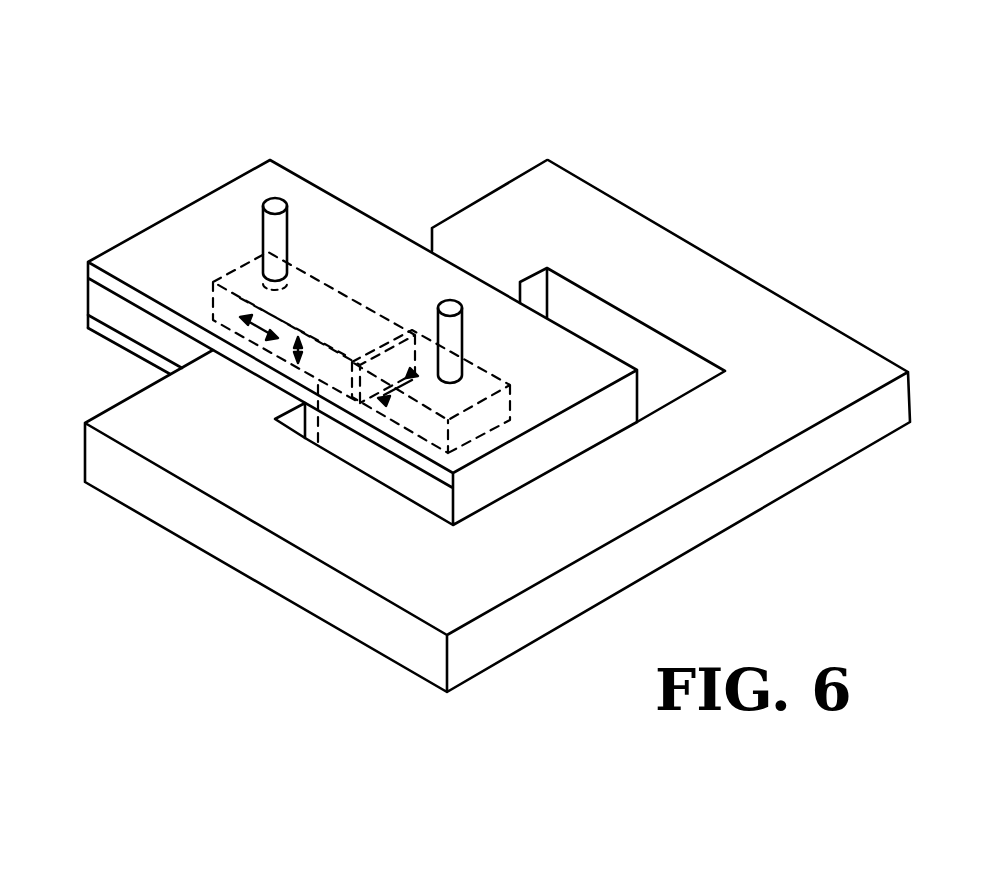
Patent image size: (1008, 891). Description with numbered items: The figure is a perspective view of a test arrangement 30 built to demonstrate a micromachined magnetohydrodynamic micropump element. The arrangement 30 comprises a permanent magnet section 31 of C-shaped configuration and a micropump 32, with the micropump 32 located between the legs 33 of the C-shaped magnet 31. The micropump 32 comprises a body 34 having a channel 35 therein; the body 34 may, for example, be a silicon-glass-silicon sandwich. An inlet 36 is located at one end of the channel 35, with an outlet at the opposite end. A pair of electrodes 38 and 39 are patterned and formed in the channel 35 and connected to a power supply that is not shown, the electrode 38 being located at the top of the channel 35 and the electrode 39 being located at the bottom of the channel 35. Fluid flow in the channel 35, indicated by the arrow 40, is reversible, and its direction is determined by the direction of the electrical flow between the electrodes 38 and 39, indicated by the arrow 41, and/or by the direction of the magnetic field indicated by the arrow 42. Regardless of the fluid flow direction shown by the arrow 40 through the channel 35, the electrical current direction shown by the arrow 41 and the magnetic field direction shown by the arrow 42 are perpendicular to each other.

The test arrangement 30 is at (412, 209).
The permanent magnet section 31 is at (367, 632).
The micropump 32 is at (131, 208).
The legs 33 is at (582, 200).
The body 34 is at (200, 220).
The channel 35 is at (303, 292).
The inlet 36 is at (262, 197).
The electrode 38 is at (393, 323).
The electrode 39 is at (322, 435).
The arrow indicating fluid flow 40 is at (260, 328).
The arrow indicating electrical current direction 41 is at (293, 357).
The arrow indicating magnetic field direction 42 is at (393, 397).